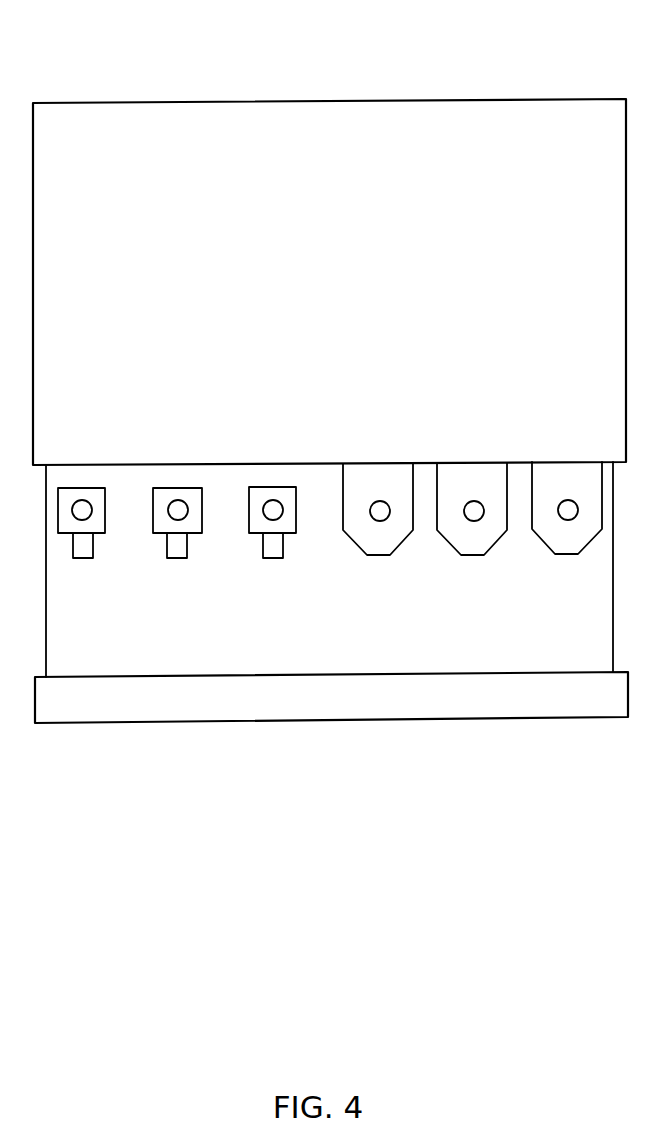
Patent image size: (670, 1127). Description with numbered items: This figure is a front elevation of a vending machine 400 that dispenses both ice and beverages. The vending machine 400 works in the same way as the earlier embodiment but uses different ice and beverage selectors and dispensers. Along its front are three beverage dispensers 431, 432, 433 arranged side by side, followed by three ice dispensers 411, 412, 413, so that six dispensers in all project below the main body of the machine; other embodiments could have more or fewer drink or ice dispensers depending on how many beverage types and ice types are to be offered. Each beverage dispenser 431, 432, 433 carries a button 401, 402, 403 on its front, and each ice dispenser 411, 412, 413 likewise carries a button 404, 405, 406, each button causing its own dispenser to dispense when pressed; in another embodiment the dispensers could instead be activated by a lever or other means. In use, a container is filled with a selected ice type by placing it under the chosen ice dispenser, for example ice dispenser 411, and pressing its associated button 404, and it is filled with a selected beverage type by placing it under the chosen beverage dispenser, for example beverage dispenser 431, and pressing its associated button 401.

The vending machine 400 is at (543, 41).
The button 401 is at (82, 500).
The button 402 is at (178, 500).
The button 403 is at (273, 500).
The button 404 is at (380, 501).
The button 405 is at (474, 501).
The button 406 is at (568, 500).
The ice dispenser 411 is at (352, 540).
The ice dispenser 412 is at (446, 540).
The ice dispenser 413 is at (541, 540).
The beverage dispenser 431 is at (105, 510).
The beverage dispenser 432 is at (202, 510).
The beverage dispenser 433 is at (296, 510).